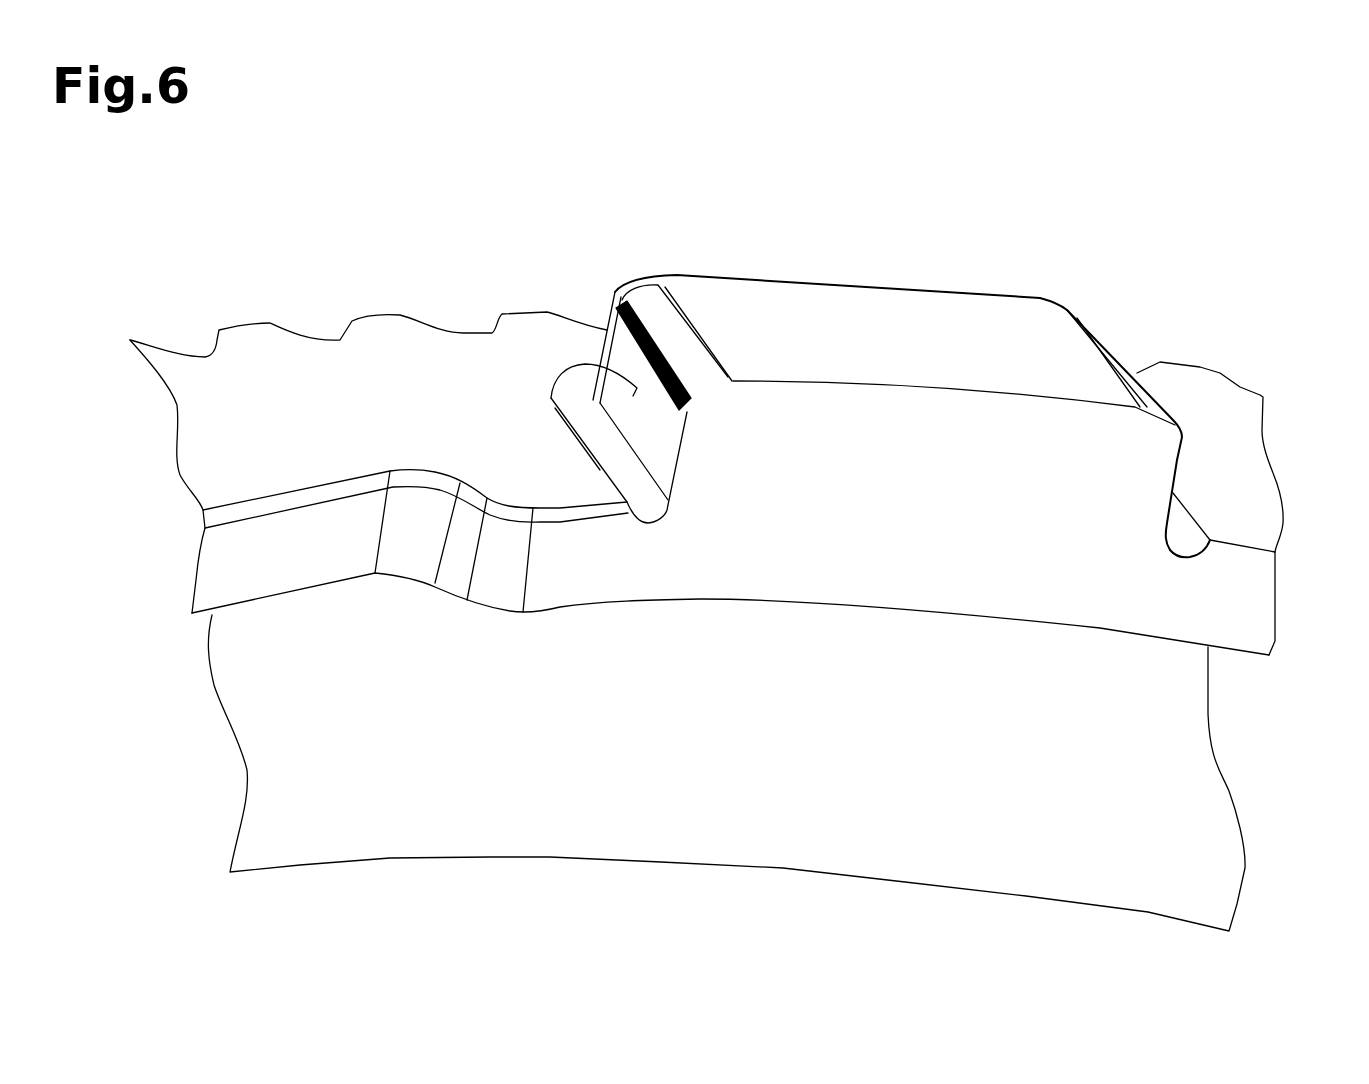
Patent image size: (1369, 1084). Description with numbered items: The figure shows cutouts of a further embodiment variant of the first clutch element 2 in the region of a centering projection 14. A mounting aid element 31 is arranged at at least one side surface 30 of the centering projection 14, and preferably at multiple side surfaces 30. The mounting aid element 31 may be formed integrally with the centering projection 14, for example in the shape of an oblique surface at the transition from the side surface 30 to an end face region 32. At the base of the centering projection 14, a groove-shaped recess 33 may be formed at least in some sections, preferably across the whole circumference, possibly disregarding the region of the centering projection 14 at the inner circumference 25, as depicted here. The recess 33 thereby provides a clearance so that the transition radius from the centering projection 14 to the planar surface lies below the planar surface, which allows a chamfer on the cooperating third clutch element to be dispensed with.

The first clutch element 2 is at (1215, 323).
The centering projection 14 is at (1063, 270).
The inner circumference 25 is at (536, 598).
The side surface 30 is at (597, 381).
The mounting aid element 31 is at (619, 298).
The end face region 32 is at (662, 272).
The recess 33 is at (592, 428).